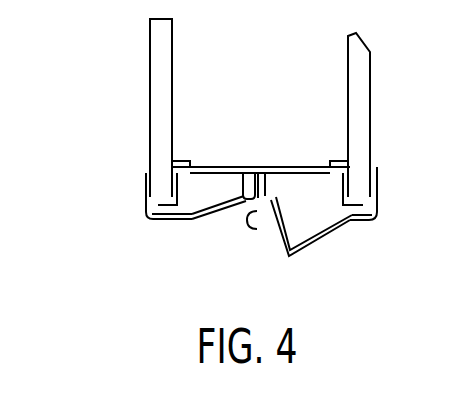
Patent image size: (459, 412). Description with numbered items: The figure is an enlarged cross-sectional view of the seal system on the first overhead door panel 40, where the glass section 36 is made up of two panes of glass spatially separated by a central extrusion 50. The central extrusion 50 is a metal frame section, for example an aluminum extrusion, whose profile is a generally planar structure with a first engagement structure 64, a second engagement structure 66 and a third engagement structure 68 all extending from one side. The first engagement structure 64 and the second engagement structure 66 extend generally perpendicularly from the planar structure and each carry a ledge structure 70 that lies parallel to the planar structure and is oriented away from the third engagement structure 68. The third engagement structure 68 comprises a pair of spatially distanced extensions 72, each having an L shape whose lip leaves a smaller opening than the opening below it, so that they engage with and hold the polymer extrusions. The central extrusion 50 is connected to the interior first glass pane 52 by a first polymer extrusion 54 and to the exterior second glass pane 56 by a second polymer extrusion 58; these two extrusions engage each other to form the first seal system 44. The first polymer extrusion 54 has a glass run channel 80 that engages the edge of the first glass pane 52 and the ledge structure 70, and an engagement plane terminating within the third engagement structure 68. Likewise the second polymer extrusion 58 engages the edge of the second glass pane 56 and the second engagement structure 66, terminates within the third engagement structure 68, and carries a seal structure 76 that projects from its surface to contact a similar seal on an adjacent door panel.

The glass section 36 is at (248, 52).
The first overhead door panel 40 is at (118, 40).
The first seal system 44 is at (128, 275).
The central extrusion 50 is at (272, 165).
The first glass pane 52 is at (158, 105).
The first polymer extrusion 54 is at (141, 205).
The second glass pane 56 is at (365, 110).
The second polymer extrusion 58 is at (378, 195).
The first engagement structure 64 is at (190, 165).
The second engagement structure 66 is at (330, 168).
The third engagement structure 68 is at (297, 208).
The ledge structure 70 is at (165, 220).
The extensions 72 is at (232, 215).
The seal structure 76 is at (253, 225).
The glass run channel 80 is at (143, 190).